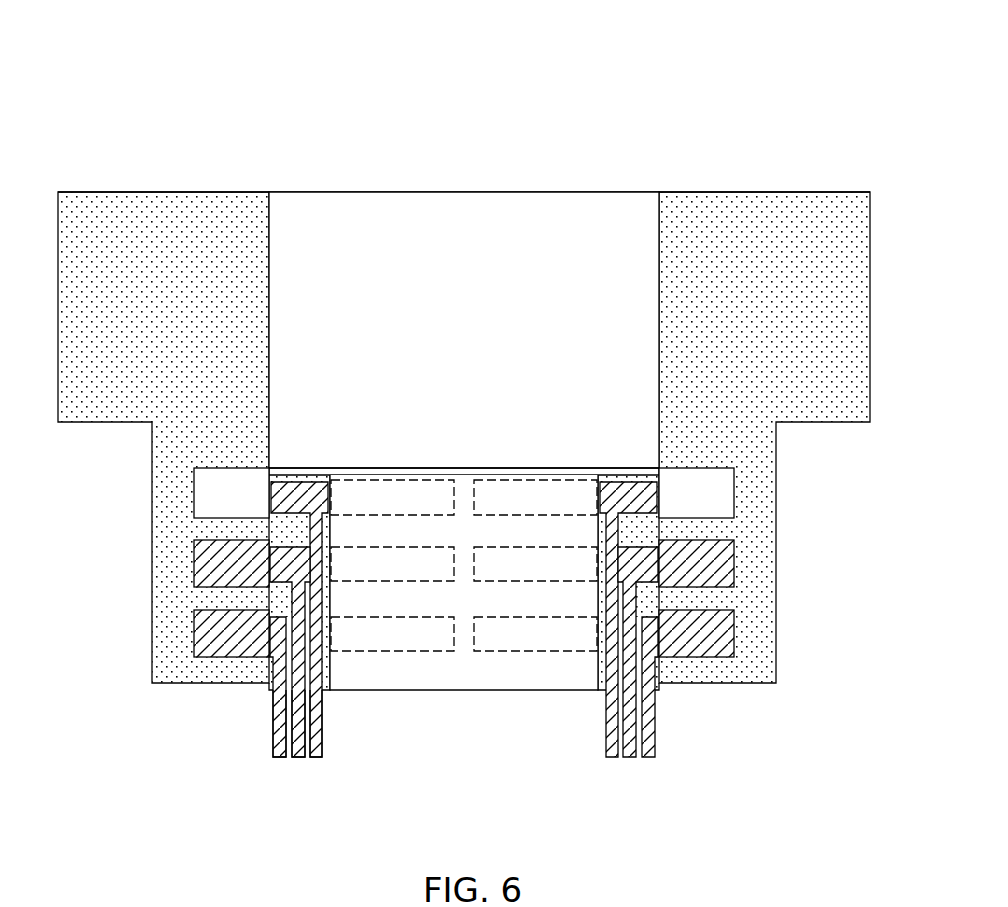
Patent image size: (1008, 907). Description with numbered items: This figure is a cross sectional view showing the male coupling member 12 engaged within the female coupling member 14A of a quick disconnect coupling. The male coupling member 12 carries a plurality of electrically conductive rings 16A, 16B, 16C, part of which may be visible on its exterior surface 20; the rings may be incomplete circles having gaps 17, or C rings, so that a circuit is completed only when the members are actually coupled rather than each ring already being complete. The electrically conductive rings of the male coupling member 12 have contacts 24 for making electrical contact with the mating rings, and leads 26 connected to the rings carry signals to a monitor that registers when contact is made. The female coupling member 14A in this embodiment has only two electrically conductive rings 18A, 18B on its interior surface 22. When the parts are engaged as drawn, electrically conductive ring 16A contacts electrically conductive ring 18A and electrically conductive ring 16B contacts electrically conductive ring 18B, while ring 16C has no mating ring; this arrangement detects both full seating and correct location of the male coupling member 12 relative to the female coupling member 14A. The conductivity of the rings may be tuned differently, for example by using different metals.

The female coupling member 14A is at (466, 166).
The interior surface 22 is at (571, 215).
The exterior surface 20 is at (267, 690).
The gaps 17 is at (465, 498).
The male coupling member 12 is at (474, 716).
The contacts 24 is at (268, 566).
The electrically conductive ring 18B is at (207, 560).
The electrically conductive ring 18A is at (205, 633).
The electrically conductive ring 16C is at (630, 496).
The electrically conductive ring 16B is at (643, 572).
The electrically conductive ring 16A is at (648, 635).
The leads 26 is at (278, 758).